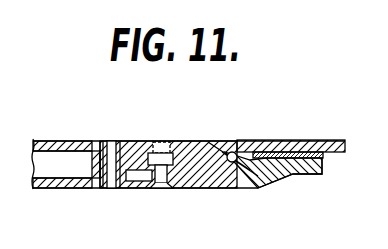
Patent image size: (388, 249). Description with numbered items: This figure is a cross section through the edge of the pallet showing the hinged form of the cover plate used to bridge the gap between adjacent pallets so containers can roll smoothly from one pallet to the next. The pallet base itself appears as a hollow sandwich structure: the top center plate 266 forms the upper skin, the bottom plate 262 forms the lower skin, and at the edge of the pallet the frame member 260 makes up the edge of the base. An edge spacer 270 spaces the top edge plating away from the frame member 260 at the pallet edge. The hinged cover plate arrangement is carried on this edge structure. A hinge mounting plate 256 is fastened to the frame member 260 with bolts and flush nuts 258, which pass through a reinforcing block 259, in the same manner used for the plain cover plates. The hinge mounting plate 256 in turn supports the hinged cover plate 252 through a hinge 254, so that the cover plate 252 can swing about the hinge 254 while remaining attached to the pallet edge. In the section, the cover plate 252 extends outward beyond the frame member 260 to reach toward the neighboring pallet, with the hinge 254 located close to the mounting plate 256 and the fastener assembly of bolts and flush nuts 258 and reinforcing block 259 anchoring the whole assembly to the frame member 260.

The hinged cover plate 252 is at (333, 140).
The hinge 254 is at (236, 141).
The hinge mounting plate 256 is at (203, 141).
The bolts and flush nuts 258 is at (147, 141).
The reinforcing block 259 is at (88, 166).
The frame member 260 is at (241, 190).
The bottom plate 262 is at (84, 189).
The top center plate 266 is at (78, 141).
The edge spacer 270 is at (328, 158).